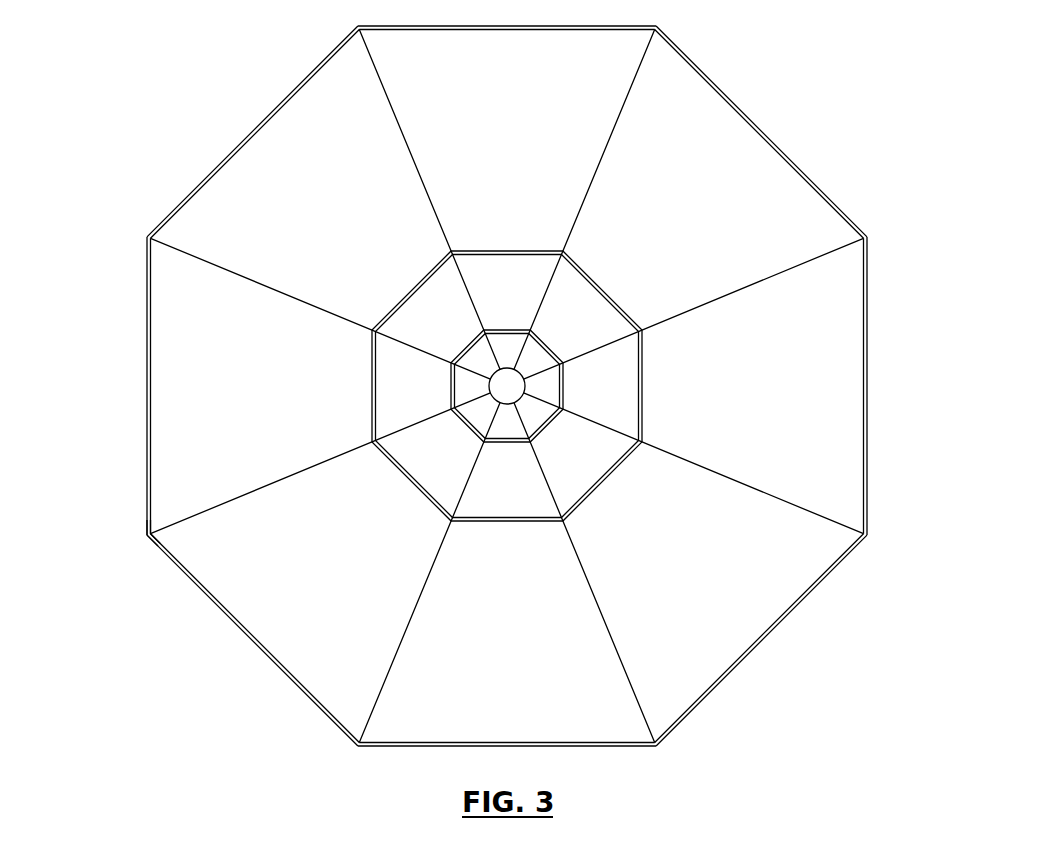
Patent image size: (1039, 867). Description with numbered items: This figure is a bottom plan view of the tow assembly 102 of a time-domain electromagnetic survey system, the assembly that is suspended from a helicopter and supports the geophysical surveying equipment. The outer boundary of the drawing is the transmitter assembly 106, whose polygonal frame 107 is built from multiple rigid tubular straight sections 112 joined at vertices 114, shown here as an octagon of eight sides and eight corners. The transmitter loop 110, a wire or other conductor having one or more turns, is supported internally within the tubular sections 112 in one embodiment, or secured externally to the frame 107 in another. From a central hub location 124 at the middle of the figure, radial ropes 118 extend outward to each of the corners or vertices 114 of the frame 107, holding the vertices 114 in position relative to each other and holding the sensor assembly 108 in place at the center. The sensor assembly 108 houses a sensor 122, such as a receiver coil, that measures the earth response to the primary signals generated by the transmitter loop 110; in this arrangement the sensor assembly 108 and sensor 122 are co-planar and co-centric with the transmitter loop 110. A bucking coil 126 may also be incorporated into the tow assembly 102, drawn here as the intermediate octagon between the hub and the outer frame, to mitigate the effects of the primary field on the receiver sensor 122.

The tow assembly 102 is at (539, 392).
The transmitter assembly 106 is at (780, 623).
The polygonal frame 107 is at (307, 697).
The sensor assembly 108 is at (548, 427).
The transmitter loop 110 is at (868, 372).
The tubular straight sections 112 is at (148, 413).
The vertices 114 is at (147, 538).
The radial ropes 118 is at (597, 173).
The sensor 122 is at (507, 447).
The central hub location 124 is at (513, 378).
The bucking coil 126 is at (523, 524).